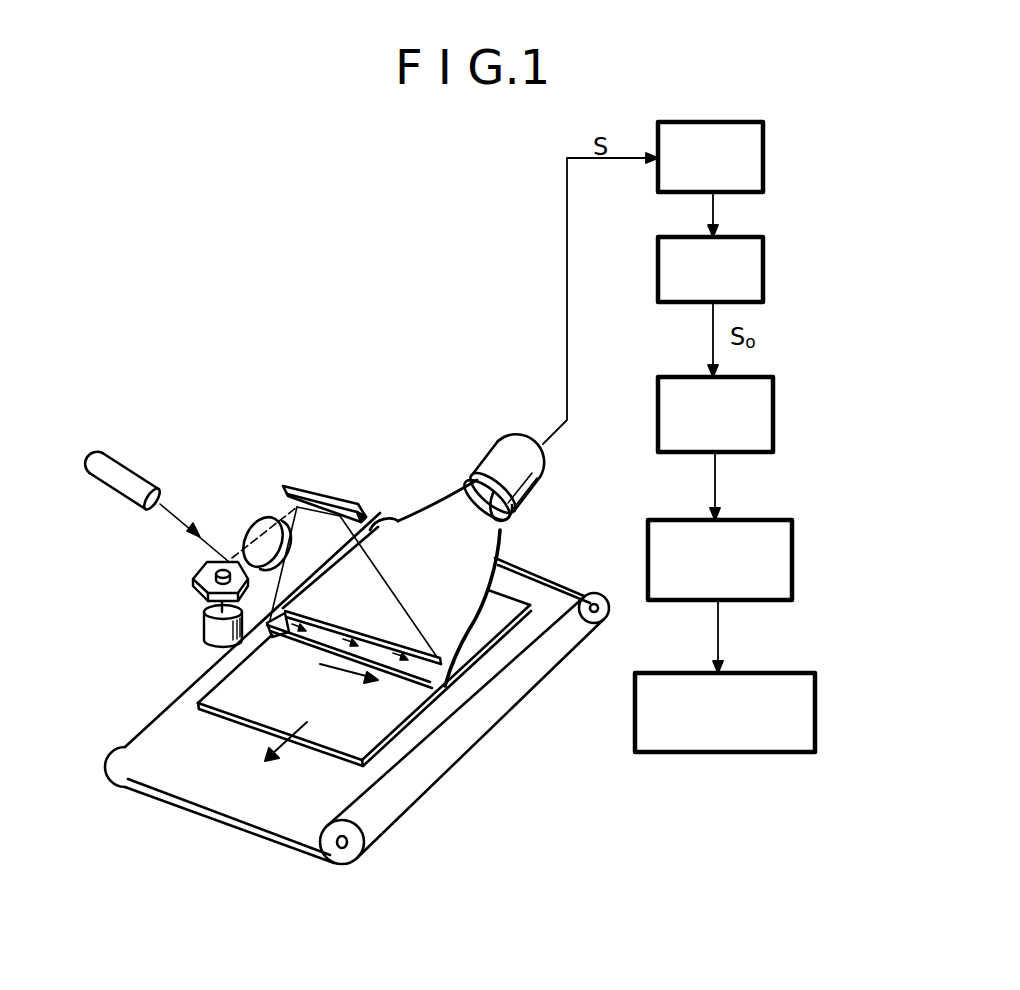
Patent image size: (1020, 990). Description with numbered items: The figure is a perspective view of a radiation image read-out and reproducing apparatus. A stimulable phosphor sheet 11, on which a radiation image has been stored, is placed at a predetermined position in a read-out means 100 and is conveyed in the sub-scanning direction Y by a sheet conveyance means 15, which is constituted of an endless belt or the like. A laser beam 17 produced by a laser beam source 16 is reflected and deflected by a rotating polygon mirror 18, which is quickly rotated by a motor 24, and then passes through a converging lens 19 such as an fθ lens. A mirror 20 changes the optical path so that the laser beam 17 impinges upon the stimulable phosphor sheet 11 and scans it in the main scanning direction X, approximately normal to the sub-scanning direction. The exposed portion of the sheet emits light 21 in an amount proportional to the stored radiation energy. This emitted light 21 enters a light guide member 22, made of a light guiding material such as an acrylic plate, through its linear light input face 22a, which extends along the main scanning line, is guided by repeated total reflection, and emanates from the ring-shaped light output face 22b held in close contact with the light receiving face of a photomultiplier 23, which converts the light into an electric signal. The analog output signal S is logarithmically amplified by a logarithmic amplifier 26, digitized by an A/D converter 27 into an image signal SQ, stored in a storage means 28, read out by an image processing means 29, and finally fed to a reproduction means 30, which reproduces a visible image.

The stimulable phosphor sheet 11 is at (383, 730).
The sheet conveyance means 15 is at (347, 794).
The laser beam source 16 is at (140, 472).
The laser beam 17 is at (188, 527).
The rotating polygon mirror 18 is at (193, 575).
The converging lens 19 is at (254, 517).
The mirror 20 is at (334, 496).
The emitted light 21 is at (307, 637).
The light guide member 22 is at (433, 537).
The linear light input face 22a is at (442, 668).
The ring-shaped light output face 22b is at (508, 528).
The photomultiplier 23 is at (505, 462).
The motor 24 is at (203, 626).
The logarithmic amplifier 26 is at (763, 172).
The A/D converter 27 is at (763, 278).
The storage means 28 is at (773, 418).
The image processing means 29 is at (792, 567).
The reproduction means 30 is at (815, 710).
The read-out means 100 is at (312, 463).